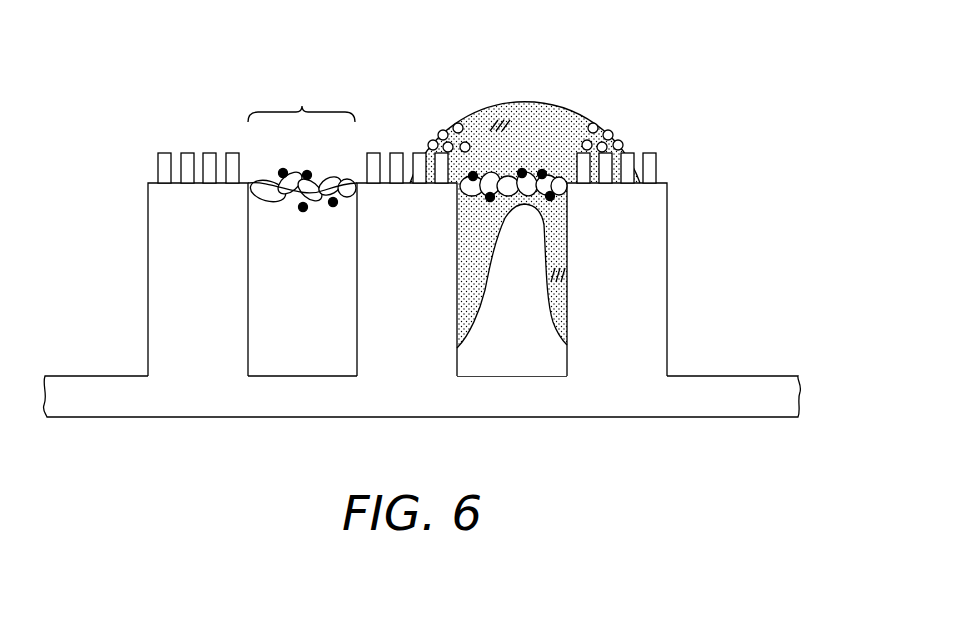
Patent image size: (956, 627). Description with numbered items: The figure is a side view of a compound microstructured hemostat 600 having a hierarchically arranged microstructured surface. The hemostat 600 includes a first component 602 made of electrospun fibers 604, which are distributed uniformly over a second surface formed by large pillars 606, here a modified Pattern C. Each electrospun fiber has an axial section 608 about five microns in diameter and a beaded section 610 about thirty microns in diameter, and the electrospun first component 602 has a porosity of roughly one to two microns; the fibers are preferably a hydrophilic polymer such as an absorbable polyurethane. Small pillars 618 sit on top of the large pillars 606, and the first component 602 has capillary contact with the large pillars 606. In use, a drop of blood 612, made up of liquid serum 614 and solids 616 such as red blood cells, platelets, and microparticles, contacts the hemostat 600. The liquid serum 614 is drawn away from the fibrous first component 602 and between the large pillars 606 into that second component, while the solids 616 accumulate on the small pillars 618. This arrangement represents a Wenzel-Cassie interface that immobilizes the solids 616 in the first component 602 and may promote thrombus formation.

The compound microstructured hemostat 600 is at (757, 373).
The first component 602 is at (302, 106).
The electrospun fibers 604 is at (320, 182).
The large pillars 606 is at (148, 240).
The axial section 608 is at (488, 170).
The beaded section 610 is at (573, 110).
The drop of blood 612 is at (542, 170).
The liquid serum 614 is at (492, 122).
The solids 616 is at (453, 127).
The small pillars 618 is at (158, 157).